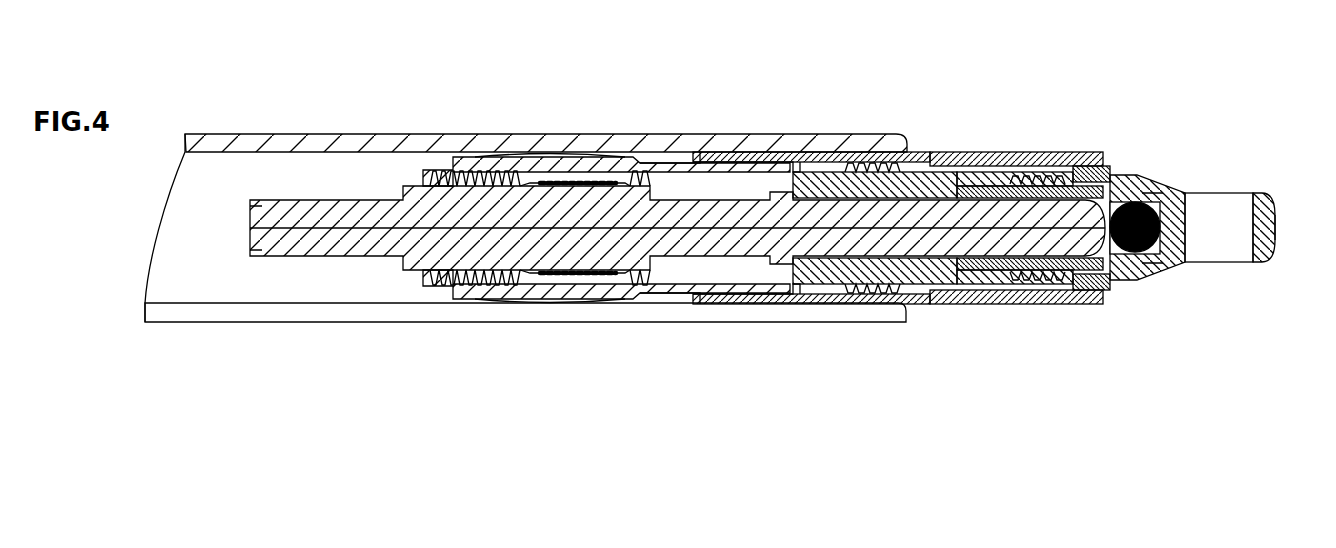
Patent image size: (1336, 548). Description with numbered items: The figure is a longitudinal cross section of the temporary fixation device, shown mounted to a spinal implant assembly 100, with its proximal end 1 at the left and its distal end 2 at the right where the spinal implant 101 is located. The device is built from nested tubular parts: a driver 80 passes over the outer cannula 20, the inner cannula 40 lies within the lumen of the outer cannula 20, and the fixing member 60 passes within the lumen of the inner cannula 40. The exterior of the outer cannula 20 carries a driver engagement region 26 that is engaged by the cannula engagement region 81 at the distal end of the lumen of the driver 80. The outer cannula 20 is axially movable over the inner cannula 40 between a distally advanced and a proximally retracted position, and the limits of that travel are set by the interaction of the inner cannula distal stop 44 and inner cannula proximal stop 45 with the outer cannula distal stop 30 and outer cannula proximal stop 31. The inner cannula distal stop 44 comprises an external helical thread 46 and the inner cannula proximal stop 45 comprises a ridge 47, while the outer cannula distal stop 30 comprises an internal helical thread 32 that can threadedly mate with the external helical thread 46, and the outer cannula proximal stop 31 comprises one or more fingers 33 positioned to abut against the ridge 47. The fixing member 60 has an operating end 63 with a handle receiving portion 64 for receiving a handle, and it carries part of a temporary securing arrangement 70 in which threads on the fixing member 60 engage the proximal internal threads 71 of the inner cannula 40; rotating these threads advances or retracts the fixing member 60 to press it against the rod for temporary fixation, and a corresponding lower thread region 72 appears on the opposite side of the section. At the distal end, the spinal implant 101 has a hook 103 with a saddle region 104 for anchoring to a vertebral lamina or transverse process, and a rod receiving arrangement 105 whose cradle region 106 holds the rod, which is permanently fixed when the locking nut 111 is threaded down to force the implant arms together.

The proximal end 1 is at (233, 98).
The distal end 2 is at (1172, 92).
The outer cannula 20 is at (975, 160).
The driver engagement region 26 is at (905, 157).
The outer cannula distal stop 30 is at (840, 165).
The outer cannula proximal stop 31 is at (700, 298).
The internal helical thread 32 is at (818, 293).
The fingers 33 is at (708, 150).
The inner cannula 40 is at (917, 177).
The inner cannula distal stop 44 is at (865, 163).
The inner cannula proximal stop 45 is at (675, 150).
The external helical thread 46 is at (873, 295).
The ridge 47 is at (657, 298).
The fixing member 60 is at (960, 186).
The operating end 63 is at (303, 248).
The handle receiving portion 64 is at (343, 202).
The temporary securing arrangement 70 is at (548, 183).
The proximal internal threads 71 is at (563, 181).
The lower ball bearing row 72 is at (573, 278).
The driver 80 is at (685, 133).
The cannula engagement region 81 is at (882, 155).
The spinal implant assembly 100 is at (1249, 95).
The spinal implant 101 is at (1276, 218).
The hook 103 is at (1274, 240).
The saddle region 104 is at (1213, 263).
The rod receiving arrangement 105 is at (1233, 195).
The cradle region 106 is at (1133, 252).
The locking nut 111 is at (1103, 167).